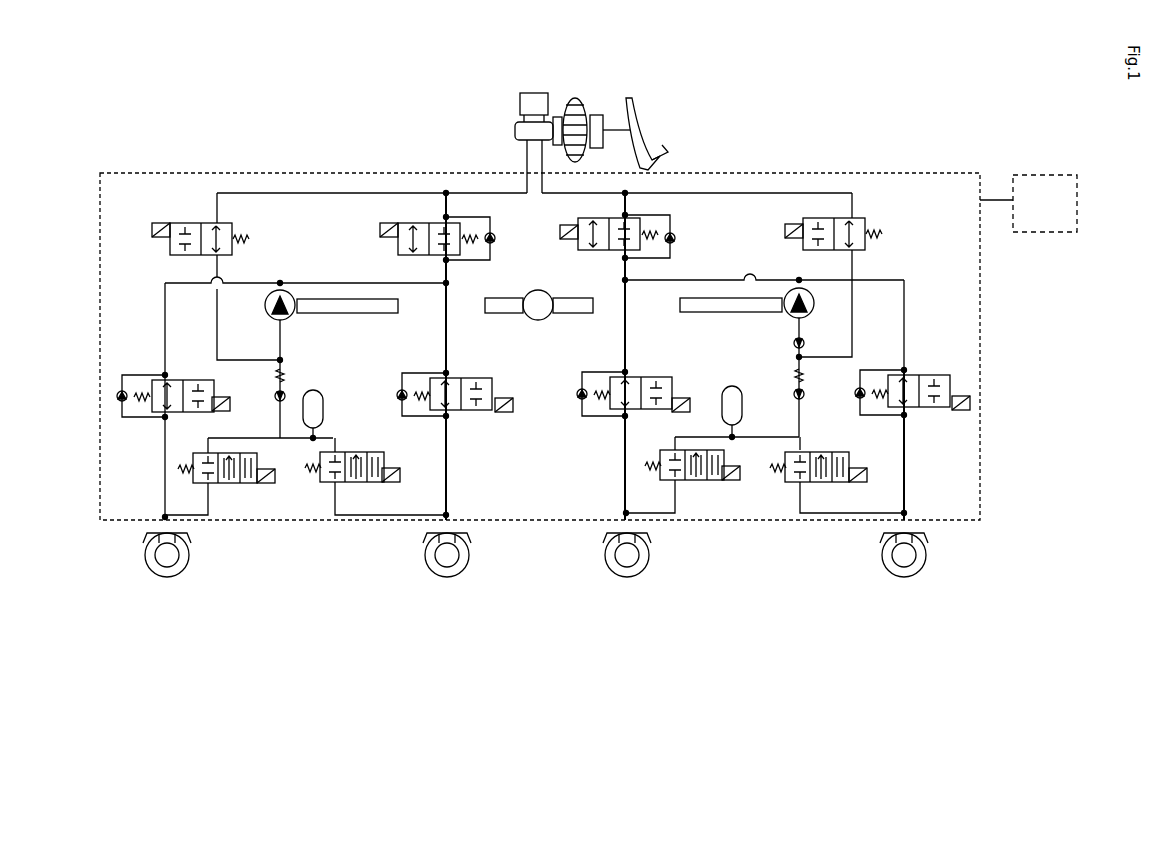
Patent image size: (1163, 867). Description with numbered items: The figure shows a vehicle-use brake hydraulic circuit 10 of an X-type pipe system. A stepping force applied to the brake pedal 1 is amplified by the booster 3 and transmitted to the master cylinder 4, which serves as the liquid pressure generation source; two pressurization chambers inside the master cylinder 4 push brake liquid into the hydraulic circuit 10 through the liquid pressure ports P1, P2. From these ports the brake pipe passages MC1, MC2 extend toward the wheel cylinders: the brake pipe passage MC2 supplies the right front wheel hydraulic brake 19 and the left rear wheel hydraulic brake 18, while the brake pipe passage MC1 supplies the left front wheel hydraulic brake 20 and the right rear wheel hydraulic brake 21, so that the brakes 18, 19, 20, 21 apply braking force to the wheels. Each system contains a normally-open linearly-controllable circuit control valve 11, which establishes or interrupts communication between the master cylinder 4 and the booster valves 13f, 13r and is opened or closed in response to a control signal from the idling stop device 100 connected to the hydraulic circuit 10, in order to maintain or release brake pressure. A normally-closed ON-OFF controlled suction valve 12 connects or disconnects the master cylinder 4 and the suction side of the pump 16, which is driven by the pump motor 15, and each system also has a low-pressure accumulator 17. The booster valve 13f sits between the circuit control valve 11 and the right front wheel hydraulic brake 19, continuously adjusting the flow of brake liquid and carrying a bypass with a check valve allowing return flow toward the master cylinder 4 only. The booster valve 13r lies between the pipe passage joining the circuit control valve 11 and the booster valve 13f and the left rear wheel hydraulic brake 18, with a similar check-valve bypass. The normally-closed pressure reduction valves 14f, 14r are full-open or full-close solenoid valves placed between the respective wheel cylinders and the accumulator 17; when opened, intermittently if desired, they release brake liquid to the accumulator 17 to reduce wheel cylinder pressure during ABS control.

The brake pedal 1 is at (664, 131).
The booster 3 is at (576, 100).
The master cylinder 4 is at (518, 124).
The hydraulic circuit 10 is at (982, 298).
The circuit control valve 11 is at (426, 222).
The suction valve 12 is at (200, 222).
The booster valve 13r is at (188, 384).
The booster valve 13f is at (466, 378).
The pressure reduction valve 14r is at (218, 487).
The pressure reduction valve 14f is at (341, 485).
The pump motor 15 is at (538, 290).
The pump 16 is at (271, 292).
The low-pressure accumulator 17 is at (322, 392).
The left rear wheel hydraulic brake 18 is at (186, 537).
The right front wheel hydraulic brake 19 is at (466, 537).
The left front wheel hydraulic brake 20 is at (646, 537).
The right rear wheel hydraulic brake 21 is at (923, 537).
The idling stop device 100 is at (1038, 175).
The liquid pressure port P1 is at (545, 146).
The liquid pressure port P2 is at (520, 146).
The brake pipe passage MC1 is at (578, 193).
The brake pipe passage MC2 is at (463, 192).